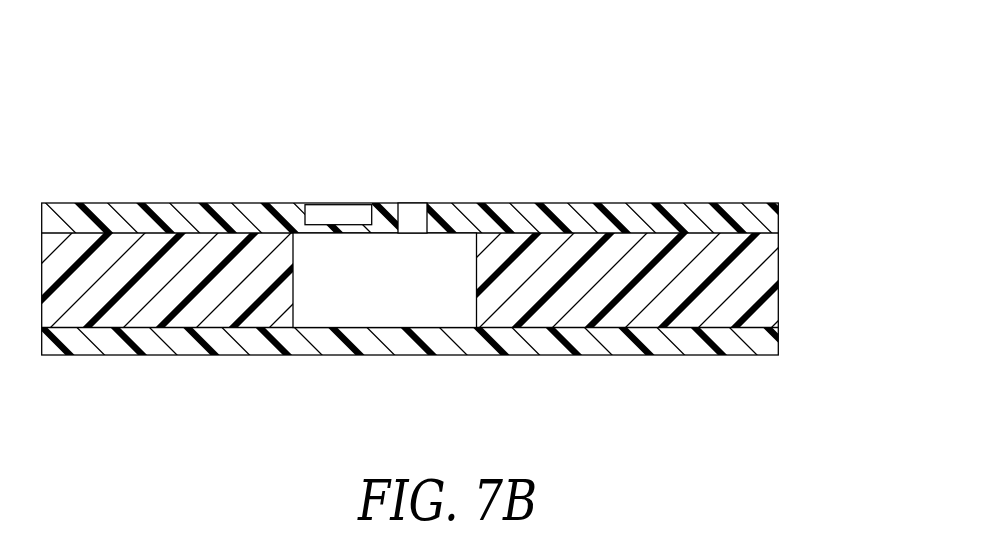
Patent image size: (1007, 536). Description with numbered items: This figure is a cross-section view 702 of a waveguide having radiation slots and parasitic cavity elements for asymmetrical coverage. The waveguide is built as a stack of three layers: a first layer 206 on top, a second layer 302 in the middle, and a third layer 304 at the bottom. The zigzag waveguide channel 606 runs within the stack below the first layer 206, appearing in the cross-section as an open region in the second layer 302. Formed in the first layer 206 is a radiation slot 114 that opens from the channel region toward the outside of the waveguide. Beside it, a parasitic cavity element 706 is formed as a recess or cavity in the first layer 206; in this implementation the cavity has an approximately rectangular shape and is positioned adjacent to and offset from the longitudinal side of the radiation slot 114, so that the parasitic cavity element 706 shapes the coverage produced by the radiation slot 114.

The cross-section view 702 is at (105, 50).
The radiation slot 114 is at (412, 218).
The parasitic cavity element 706 is at (335, 212).
The first layer 206 is at (683, 213).
The second layer 302 is at (747, 263).
The third layer 304 is at (708, 337).
The zigzag waveguide channel 606 is at (370, 282).